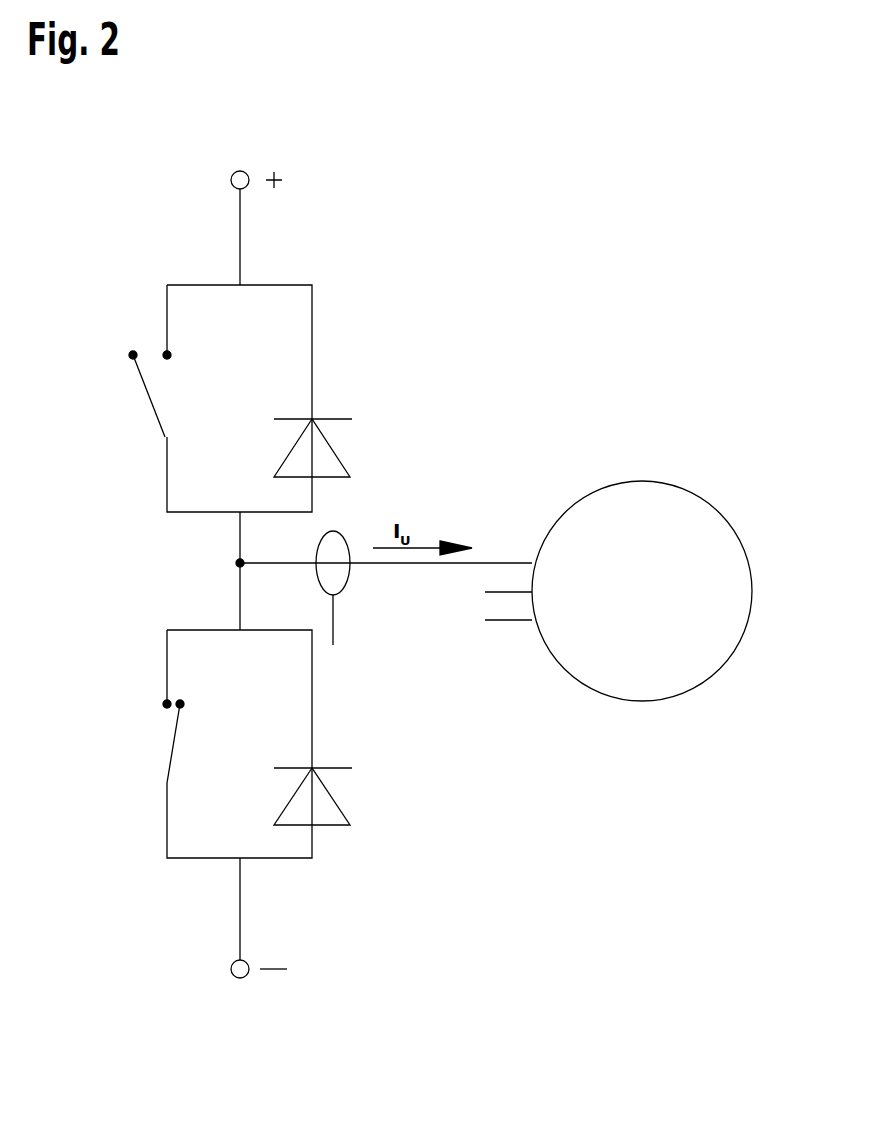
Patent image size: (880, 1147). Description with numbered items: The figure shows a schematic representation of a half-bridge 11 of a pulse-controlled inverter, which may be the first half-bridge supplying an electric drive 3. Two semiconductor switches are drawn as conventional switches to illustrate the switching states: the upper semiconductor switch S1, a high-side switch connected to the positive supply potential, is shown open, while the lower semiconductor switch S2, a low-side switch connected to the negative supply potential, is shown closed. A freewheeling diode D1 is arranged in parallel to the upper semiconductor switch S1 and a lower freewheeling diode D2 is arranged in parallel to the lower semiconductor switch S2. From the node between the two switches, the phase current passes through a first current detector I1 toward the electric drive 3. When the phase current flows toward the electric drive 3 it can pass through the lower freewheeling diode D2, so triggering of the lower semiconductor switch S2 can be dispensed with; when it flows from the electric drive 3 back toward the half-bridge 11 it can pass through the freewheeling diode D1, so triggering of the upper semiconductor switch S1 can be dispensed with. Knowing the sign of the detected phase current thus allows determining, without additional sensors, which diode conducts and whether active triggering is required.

The upper semiconductor switch S1 is at (150, 400).
The lower semiconductor switch S2 is at (173, 747).
The freewheeling diode D1 is at (340, 451).
The lower freewheeling diode D2 is at (335, 800).
The first current detector I1 is at (345, 592).
The electric drive 3 is at (640, 481).
The half-bridge 11 is at (579, 226).